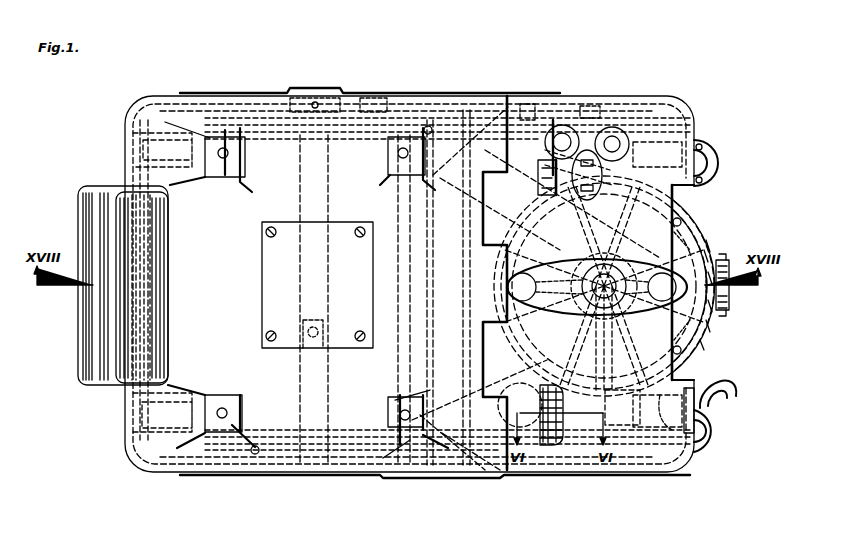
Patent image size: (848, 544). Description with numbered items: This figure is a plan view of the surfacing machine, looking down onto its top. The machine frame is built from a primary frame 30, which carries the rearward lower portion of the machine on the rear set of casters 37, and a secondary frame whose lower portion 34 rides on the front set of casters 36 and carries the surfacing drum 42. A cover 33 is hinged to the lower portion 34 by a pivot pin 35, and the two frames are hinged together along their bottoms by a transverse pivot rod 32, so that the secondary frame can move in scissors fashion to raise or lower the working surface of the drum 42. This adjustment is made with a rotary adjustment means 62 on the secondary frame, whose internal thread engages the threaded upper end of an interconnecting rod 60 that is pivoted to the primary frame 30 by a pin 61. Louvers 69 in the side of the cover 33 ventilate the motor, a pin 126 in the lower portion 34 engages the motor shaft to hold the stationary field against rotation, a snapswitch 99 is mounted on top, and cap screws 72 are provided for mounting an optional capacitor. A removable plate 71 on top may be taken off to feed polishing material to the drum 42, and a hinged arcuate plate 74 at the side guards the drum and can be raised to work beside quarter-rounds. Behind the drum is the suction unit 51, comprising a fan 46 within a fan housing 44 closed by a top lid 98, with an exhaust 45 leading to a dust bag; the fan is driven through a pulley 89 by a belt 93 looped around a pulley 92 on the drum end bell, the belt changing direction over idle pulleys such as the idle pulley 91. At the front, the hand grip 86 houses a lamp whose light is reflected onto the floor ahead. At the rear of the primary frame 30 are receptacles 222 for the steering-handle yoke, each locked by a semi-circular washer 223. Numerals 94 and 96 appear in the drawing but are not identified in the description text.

The primary frame 30 is at (672, 112).
The transverse pivot rod 32 is at (430, 268).
The cover 33 is at (395, 118).
The lower portion of the secondary frame 34 is at (592, 100).
The pivot pin 35 is at (490, 130).
The front set of casters 36 is at (150, 152).
The rear set of casters 37 is at (670, 150).
The surfacing drum 42 is at (300, 132).
The fan housing 44 is at (700, 324).
The exhaust 45 is at (726, 258).
The fan 46 is at (680, 270).
The suction unit 51 is at (733, 289).
The interconnecting rod 60 is at (595, 430).
The pin 61 is at (694, 440).
The rotary adjustment means 62 is at (553, 440).
The louvers 69 is at (292, 96).
The removable plate 71 is at (345, 224).
The cap screws 72 is at (222, 160).
The arcuate plate 74 is at (428, 126).
The front hand grip 86 is at (95, 315).
The pulley 89 is at (575, 292).
The idle pulley 91 is at (602, 172).
The pulley 92 is at (362, 114).
The belt 93 is at (520, 128).
The lever 94 is at (388, 458).
The pin 96 is at (690, 222).
The top lid 98 is at (562, 160).
The snapswitch 99 is at (540, 172).
The pin 126 is at (316, 102).
The receptacles 222 is at (720, 162).
The semi-circular washer 223 is at (728, 386).